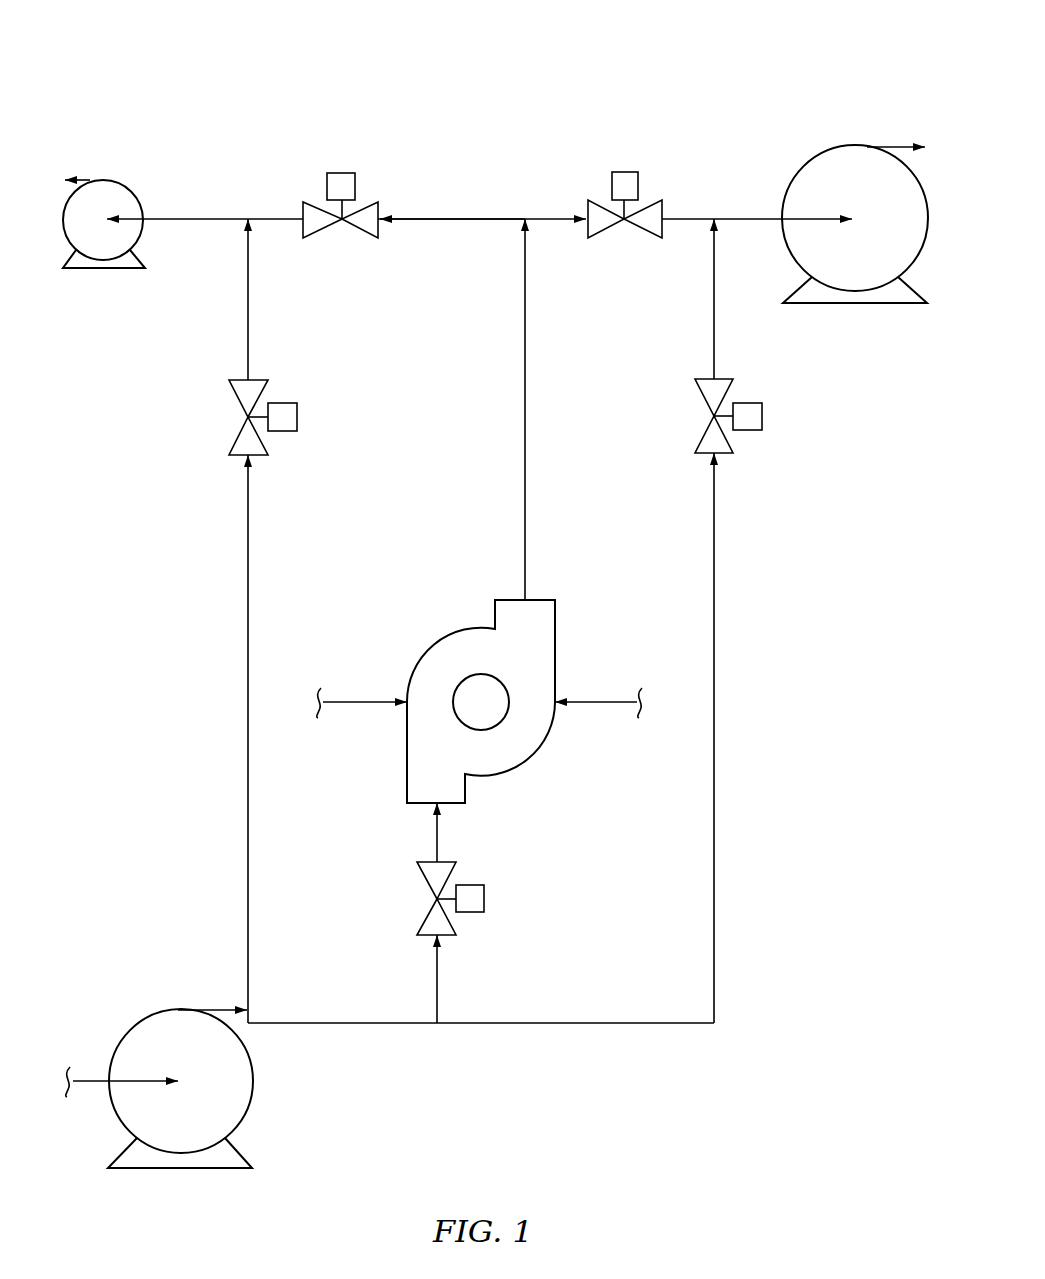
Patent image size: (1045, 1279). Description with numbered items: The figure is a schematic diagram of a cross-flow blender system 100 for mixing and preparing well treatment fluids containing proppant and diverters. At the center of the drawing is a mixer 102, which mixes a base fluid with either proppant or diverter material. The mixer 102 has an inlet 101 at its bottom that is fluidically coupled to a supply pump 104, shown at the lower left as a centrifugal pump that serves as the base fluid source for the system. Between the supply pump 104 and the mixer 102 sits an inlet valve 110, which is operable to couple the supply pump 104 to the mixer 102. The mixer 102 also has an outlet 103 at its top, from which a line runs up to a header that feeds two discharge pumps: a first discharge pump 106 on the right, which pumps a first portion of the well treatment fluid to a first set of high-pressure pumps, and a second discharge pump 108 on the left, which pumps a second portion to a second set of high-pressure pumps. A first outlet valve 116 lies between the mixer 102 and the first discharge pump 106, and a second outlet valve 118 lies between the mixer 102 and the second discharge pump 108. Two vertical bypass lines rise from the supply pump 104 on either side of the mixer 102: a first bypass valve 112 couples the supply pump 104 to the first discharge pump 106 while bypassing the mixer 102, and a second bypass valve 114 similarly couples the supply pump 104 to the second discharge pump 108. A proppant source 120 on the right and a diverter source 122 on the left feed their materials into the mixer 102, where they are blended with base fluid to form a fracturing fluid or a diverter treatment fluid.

The system 100 is at (127, 85).
The inlet 101 is at (423, 813).
The mixer 102 is at (513, 768).
The outlet 103 is at (542, 600).
The supply pump 104 is at (132, 1027).
The first discharge pump 106 is at (812, 158).
The second discharge pump 108 is at (137, 192).
The inlet valve 110 is at (428, 918).
The first bypass valve 112 is at (707, 432).
The second bypass valve 114 is at (237, 438).
The first outlet valve 116 is at (607, 238).
The second outlet valve 118 is at (360, 238).
The proppant source 120 is at (608, 702).
The diverter source 122 is at (350, 702).